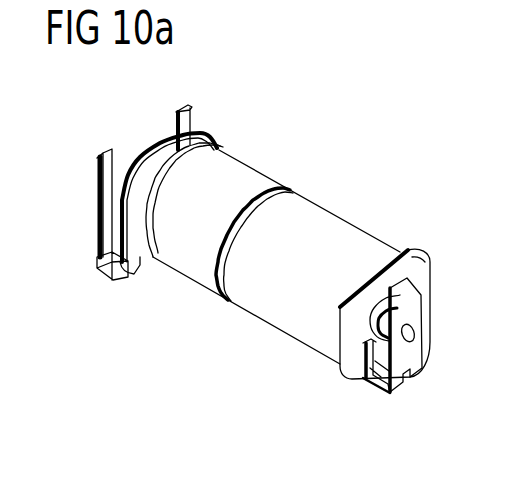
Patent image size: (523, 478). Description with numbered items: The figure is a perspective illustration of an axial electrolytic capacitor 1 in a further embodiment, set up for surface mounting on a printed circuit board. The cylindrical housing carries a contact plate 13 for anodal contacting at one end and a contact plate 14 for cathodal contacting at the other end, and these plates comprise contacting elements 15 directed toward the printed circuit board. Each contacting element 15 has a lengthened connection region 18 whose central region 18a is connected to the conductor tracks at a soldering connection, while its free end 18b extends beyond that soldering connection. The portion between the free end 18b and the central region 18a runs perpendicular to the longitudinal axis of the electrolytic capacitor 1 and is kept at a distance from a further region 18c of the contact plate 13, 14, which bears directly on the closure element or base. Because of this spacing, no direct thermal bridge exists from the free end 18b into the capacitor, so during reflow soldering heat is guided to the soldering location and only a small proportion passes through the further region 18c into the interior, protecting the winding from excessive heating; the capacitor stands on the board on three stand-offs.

The electrolytic capacitor 1 is at (358, 169).
The contact plate for anodal contacting 13 is at (215, 143).
The contact plate for cathodal contacting 14 is at (425, 253).
The contacting element 15 is at (407, 382).
The lengthened connection region 18 is at (96, 162).
The central region 18a is at (110, 263).
The free end 18b is at (192, 115).
The further region 18c is at (147, 158).